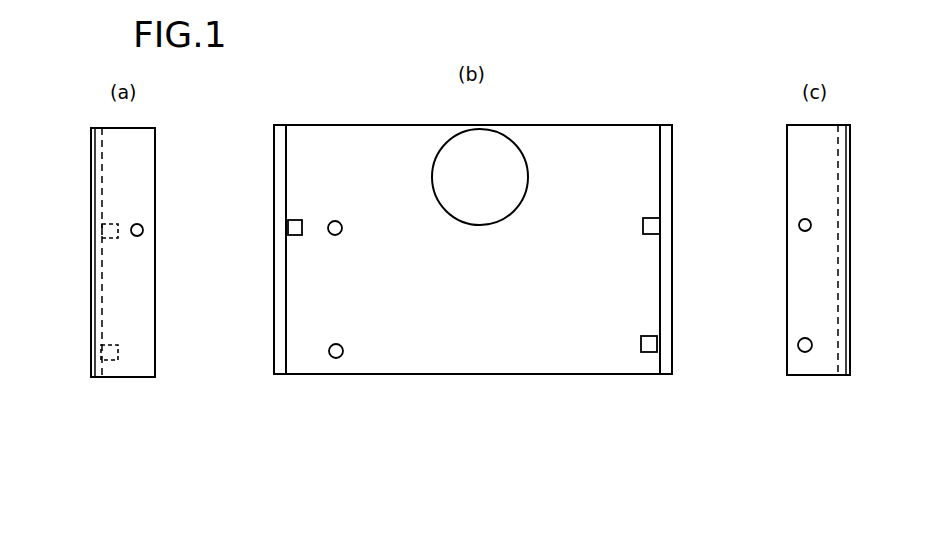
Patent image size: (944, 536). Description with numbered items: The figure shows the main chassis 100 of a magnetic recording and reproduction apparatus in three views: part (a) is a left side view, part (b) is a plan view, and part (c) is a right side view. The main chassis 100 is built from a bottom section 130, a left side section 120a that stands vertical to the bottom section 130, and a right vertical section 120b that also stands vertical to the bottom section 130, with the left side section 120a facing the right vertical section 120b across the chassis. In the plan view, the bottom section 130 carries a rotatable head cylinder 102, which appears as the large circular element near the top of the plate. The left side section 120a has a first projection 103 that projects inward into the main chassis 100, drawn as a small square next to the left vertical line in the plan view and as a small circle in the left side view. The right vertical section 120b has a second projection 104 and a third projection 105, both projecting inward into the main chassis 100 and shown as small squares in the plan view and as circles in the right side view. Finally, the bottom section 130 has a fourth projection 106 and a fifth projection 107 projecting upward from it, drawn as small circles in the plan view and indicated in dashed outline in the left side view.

The main chassis 100 is at (678, 56).
The head cylinder 102 is at (485, 146).
The first projection 103 is at (143, 228).
The second projection 104 is at (800, 225).
The third projection 105 is at (800, 343).
The fourth projection 106 is at (330, 233).
The fifth projection 107 is at (336, 358).
The left side section 120a is at (275, 308).
The right vertical section 120b is at (787, 268).
The bottom section 130 is at (353, 130).